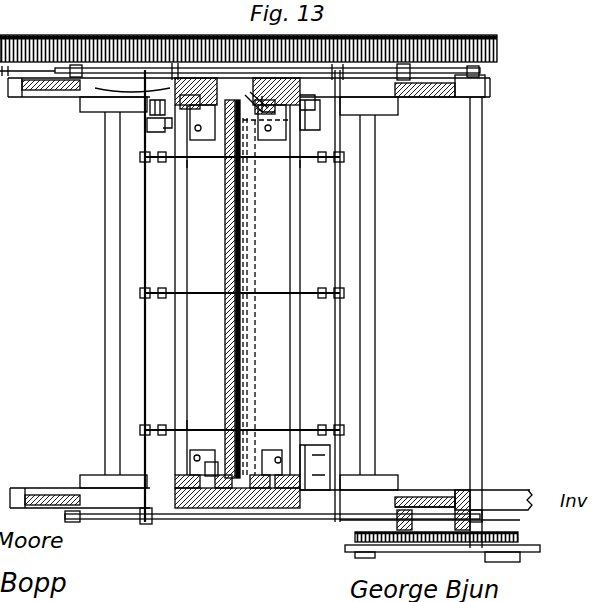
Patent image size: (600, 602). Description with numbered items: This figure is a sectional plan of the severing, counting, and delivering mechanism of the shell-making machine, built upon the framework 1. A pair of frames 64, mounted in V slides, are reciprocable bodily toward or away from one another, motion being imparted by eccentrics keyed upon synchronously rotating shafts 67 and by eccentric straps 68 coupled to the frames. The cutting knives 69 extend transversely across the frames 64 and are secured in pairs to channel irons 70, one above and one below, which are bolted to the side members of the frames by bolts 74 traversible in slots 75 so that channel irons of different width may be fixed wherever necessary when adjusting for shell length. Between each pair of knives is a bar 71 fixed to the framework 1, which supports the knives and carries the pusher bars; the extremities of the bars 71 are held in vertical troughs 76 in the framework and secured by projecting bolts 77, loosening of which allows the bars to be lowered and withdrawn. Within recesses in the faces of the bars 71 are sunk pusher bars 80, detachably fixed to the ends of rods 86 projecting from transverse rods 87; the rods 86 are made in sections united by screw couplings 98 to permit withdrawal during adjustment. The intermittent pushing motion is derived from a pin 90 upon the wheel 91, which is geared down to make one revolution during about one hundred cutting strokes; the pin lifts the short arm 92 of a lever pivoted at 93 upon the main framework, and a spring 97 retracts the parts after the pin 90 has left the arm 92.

The framework 1 is at (181, 78).
The frames 64 is at (178, 137).
The shafts 67 is at (106, 200).
The eccentric straps 68 is at (84, 112).
The cutting knives 69 is at (237, 290).
The channel irons 70 is at (196, 470).
The bar 71 is at (226, 222).
The bolts 74 is at (190, 498).
The slots 75 is at (270, 470).
The vertical troughs 76 is at (270, 100).
The projecting bolts 77 is at (256, 74).
The pusher bars 80 is at (233, 343).
The rods 86 is at (213, 163).
The transverse rods 87 is at (146, 262).
The pin 90 is at (448, 524).
The wheel 91 is at (430, 545).
The short arm 92 is at (466, 500).
The pivot 93 is at (480, 505).
The spring 97 is at (248, 31).
The screw couplings 98 is at (165, 298).